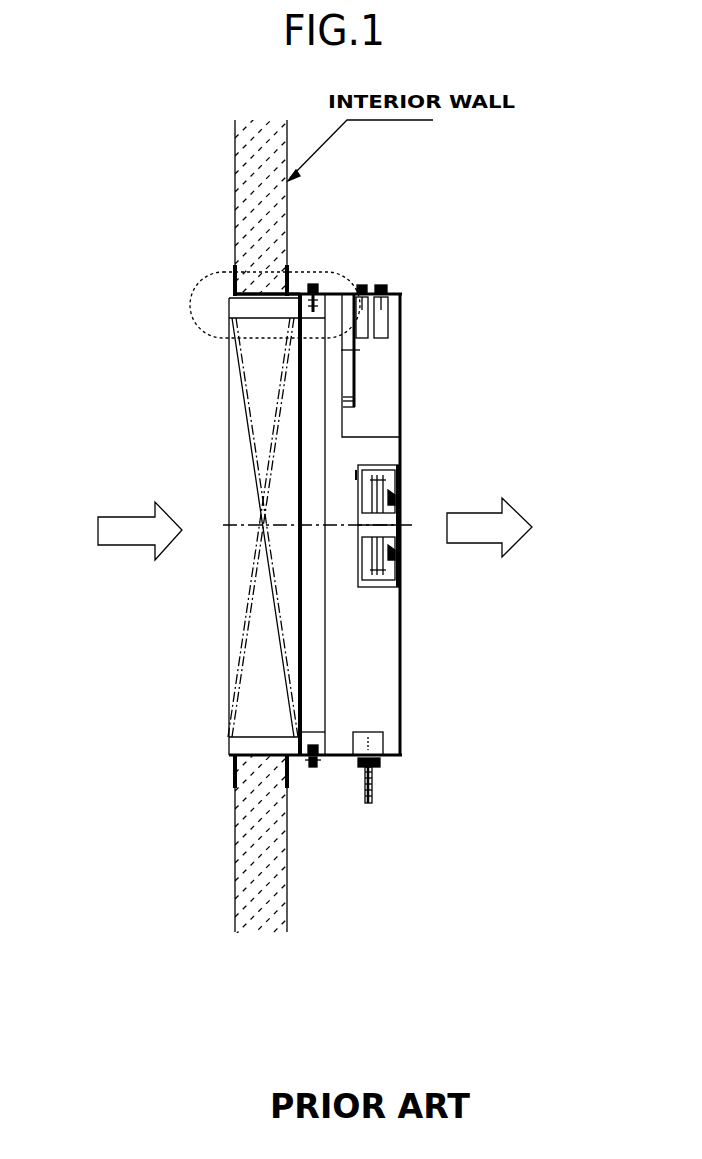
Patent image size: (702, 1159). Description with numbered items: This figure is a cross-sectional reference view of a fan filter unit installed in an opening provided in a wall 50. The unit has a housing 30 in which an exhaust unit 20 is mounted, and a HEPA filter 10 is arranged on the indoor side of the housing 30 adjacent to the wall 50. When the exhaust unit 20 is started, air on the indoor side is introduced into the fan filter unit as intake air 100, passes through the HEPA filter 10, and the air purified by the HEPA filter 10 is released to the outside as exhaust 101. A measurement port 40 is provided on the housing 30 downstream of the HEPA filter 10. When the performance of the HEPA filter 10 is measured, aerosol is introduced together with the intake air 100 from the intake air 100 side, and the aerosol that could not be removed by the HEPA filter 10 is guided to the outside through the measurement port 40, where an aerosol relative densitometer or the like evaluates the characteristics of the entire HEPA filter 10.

The HEPA filter 10 is at (250, 582).
The exhaust unit 20 is at (374, 585).
The housing 30 is at (400, 743).
The measurement port 40 is at (375, 787).
The wall 50 is at (280, 240).
The intake air 100 is at (140, 523).
The exhaust 101 is at (483, 525).